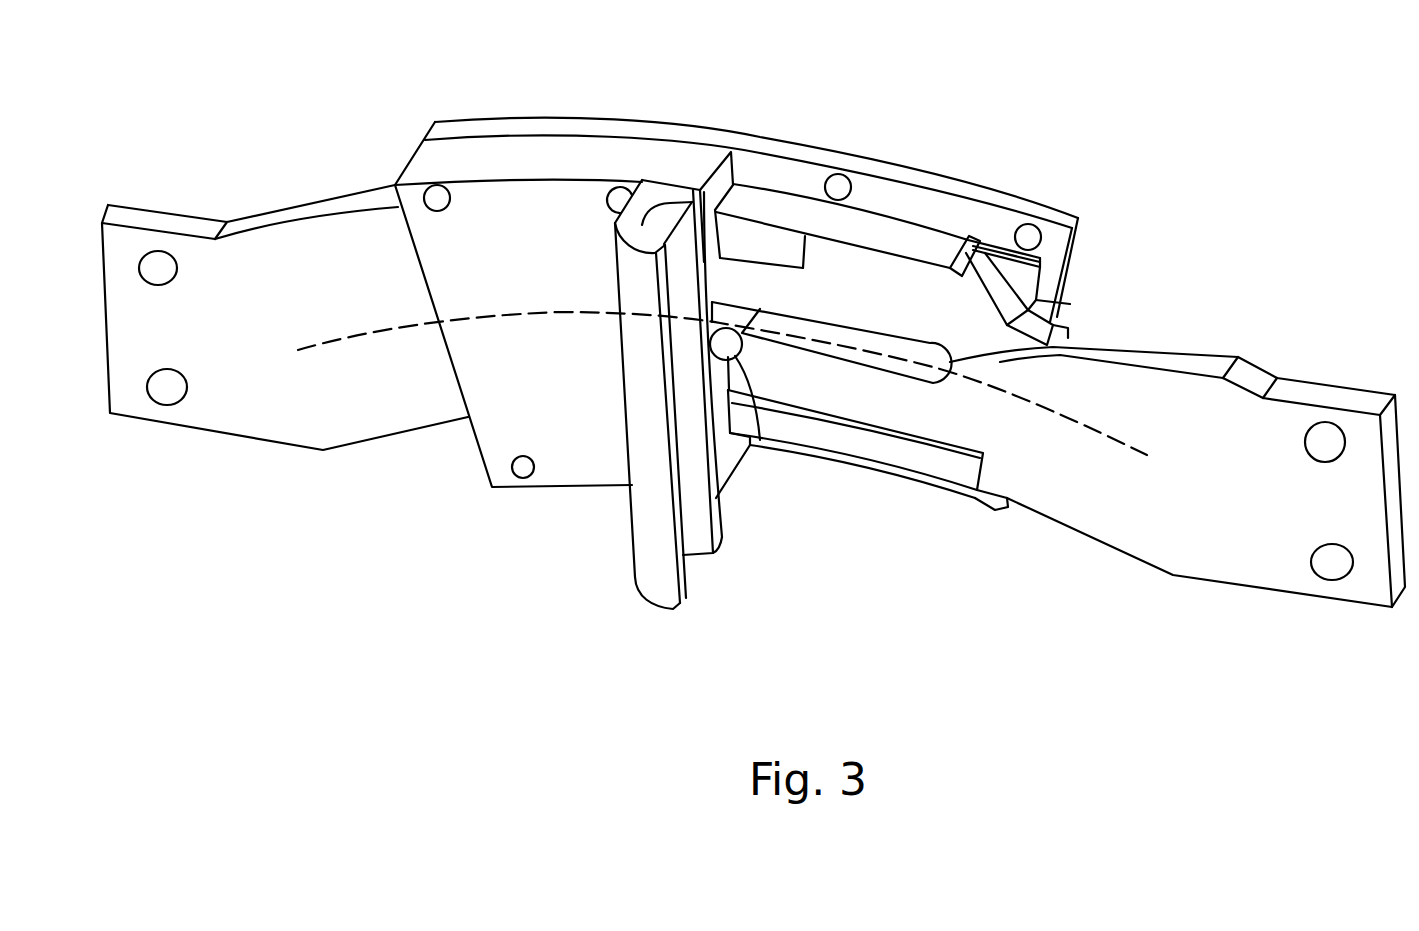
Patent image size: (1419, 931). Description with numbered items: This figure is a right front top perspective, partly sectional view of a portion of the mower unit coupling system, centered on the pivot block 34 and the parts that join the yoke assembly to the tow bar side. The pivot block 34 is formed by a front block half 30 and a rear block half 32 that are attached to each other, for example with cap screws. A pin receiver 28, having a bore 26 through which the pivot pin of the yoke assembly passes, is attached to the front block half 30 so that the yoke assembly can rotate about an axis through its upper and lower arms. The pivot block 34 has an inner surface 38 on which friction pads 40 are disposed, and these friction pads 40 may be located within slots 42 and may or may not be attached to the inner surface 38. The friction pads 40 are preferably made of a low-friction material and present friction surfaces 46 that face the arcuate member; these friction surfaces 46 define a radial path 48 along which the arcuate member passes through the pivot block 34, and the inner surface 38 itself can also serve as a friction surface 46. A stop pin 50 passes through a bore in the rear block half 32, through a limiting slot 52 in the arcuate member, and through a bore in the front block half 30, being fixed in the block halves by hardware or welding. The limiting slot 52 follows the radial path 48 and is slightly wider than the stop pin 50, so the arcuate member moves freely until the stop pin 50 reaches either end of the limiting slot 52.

The bore 26 is at (695, 530).
The pin receiver 28 is at (642, 532).
The front block half 30 is at (440, 153).
The rear block half 32 is at (465, 128).
The pivot block 34 is at (515, 418).
The inner surface 38 is at (1056, 243).
The friction pads 40 is at (755, 240).
The slots 42 is at (1007, 250).
The friction surfaces 46 is at (1022, 285).
The radial path 48 is at (1097, 430).
The stop pin 50 is at (724, 350).
The limiting slot 52 is at (1050, 350).